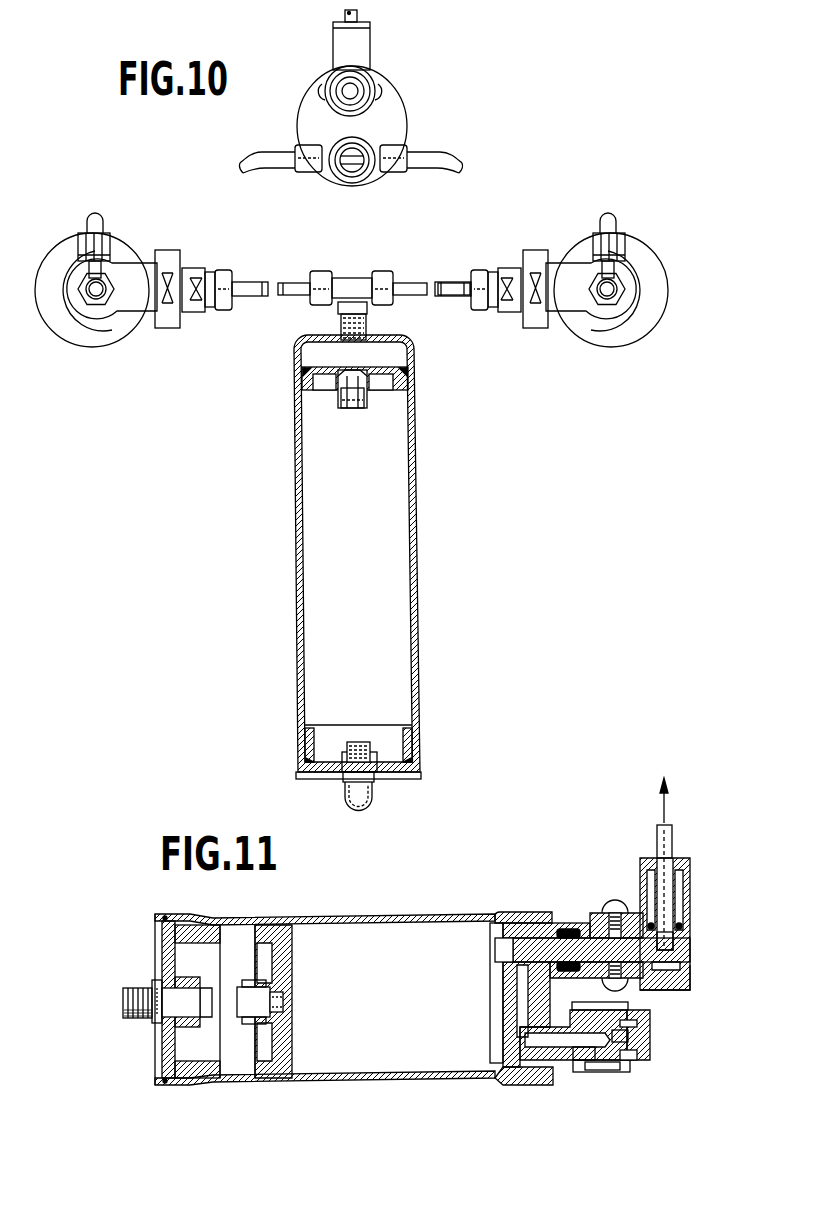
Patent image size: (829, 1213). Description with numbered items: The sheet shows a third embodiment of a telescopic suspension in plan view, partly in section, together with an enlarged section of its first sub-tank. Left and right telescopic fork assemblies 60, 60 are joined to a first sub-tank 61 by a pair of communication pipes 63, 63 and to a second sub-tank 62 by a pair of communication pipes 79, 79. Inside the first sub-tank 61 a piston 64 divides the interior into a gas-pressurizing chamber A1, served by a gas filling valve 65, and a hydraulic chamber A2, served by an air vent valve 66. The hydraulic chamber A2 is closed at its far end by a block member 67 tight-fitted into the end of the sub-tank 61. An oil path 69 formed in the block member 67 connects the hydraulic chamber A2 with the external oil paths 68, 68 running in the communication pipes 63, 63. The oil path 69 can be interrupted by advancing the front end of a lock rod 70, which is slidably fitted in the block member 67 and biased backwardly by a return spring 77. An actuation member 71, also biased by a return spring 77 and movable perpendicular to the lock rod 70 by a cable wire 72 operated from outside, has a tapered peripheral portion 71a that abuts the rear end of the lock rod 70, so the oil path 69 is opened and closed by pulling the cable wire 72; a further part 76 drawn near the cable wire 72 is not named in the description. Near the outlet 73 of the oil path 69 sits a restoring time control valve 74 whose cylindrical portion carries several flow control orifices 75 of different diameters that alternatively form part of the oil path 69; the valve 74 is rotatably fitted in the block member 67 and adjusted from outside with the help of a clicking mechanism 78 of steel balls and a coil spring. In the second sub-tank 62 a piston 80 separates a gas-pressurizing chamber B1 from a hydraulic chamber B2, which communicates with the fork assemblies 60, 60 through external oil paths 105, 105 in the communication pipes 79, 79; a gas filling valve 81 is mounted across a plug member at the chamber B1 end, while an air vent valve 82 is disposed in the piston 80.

In FIG. 10, the telescopic fork assembly 60 is at (128, 335).
In FIG. 10, the first sub-tank 61 is at (390, 110).
In FIG. 11, the first sub-tank 61 is at (377, 1084).
In FIG. 10, the second sub-tank 62 is at (417, 555).
In FIG. 10, the communication pipe 63 is at (257, 162).
In FIG. 11, the piston 64 is at (291, 948).
In FIG. 11, the gas filling valve 65 is at (135, 988).
In FIG. 11, the air vent valve 66 is at (252, 1001).
In FIG. 11, the block member 67 is at (533, 911).
In FIG. 10, the external oil path 68 is at (97, 227).
In FIG. 11, the external oil path 68 is at (603, 1060).
In FIG. 11, the oil path 69 is at (545, 1085).
In FIG. 11, the lock rod 70 is at (594, 913).
In FIG. 11, the actuation member 71 is at (690, 952).
In FIG. 11, the tapered peripheral portion 71a is at (650, 988).
In FIG. 11, the cable wire 72 is at (673, 922).
In FIG. 10, the outlet 73 is at (364, 40).
In FIG. 11, the outlet 73 is at (640, 1060).
In FIG. 11, the restoring time control valve 74 is at (640, 1042).
In FIG. 11, the flow control orifice 75 is at (578, 1073).
In FIG. 11, the outlet fitting 76 is at (688, 896).
In FIG. 11, the return spring 77 is at (567, 928).
In FIG. 11, the clicking mechanism 78 is at (632, 1073).
In FIG. 10, the communication pipe 79 is at (297, 283).
In FIG. 10, the piston 80 is at (413, 388).
In FIG. 10, the gas filling valve 81 is at (375, 801).
In FIG. 10, the air vent valve 82 is at (352, 408).
In FIG. 10, the external oil path 105 is at (268, 283).
In FIG. 11, the gas-pressurizing chamber A1 is at (242, 1068).
In FIG. 11, the hydraulic chamber A2 is at (406, 1019).
In FIG. 10, the gas-pressurizing chamber B1 is at (374, 572).
In FIG. 10, the hydraulic chamber B2 is at (394, 353).